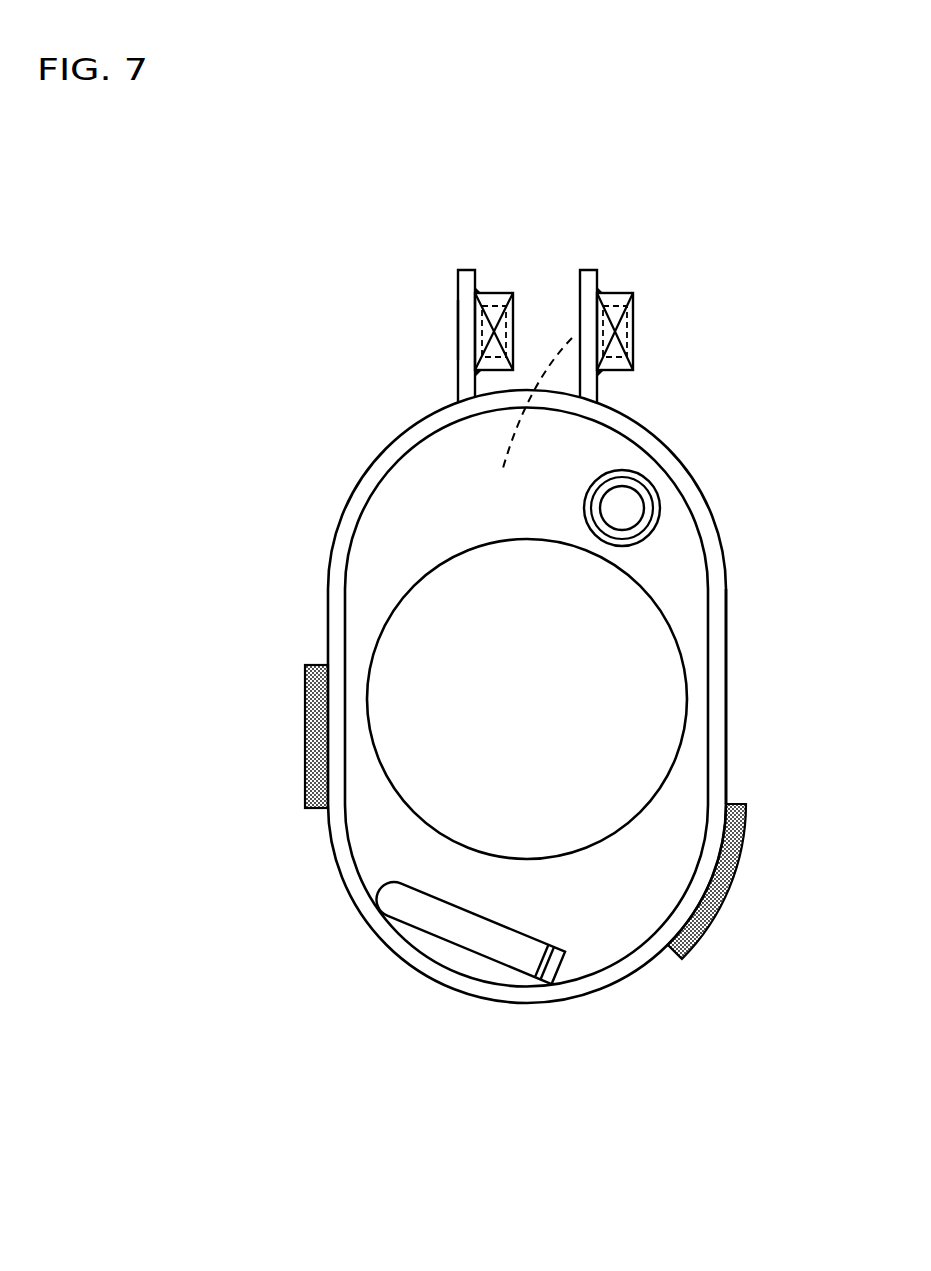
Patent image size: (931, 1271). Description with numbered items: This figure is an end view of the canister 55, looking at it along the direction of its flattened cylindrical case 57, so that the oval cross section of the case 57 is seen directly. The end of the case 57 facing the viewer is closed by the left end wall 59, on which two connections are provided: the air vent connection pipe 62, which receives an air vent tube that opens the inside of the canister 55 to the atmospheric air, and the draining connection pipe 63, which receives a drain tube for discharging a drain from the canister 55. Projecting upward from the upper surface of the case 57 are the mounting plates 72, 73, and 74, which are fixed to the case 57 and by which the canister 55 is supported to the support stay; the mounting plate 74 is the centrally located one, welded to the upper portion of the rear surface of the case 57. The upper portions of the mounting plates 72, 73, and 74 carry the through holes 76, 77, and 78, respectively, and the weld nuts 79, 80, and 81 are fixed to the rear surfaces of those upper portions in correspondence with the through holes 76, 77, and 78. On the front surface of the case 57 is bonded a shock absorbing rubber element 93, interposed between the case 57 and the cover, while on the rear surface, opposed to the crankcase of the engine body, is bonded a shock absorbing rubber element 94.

The canister 55 is at (377, 455).
The case 57 is at (715, 577).
The left end wall 59 is at (615, 923).
The air vent connection pipe 62 is at (633, 468).
The draining connection pipe 63 is at (458, 930).
The mounting plate 72 is at (429, 280).
The mounting plate 73 is at (470, 278).
The mounting plate 74 is at (588, 275).
The through hole 76 is at (376, 330).
The through hole 77 is at (457, 322).
The through hole 78 is at (529, 419).
The weld nut 79 is at (551, 260).
The weld nut 80 is at (497, 297).
The weld nut 81 is at (632, 318).
The shock absorbing rubber element 93 is at (305, 745).
The shock absorbing rubber element 94 is at (722, 903).